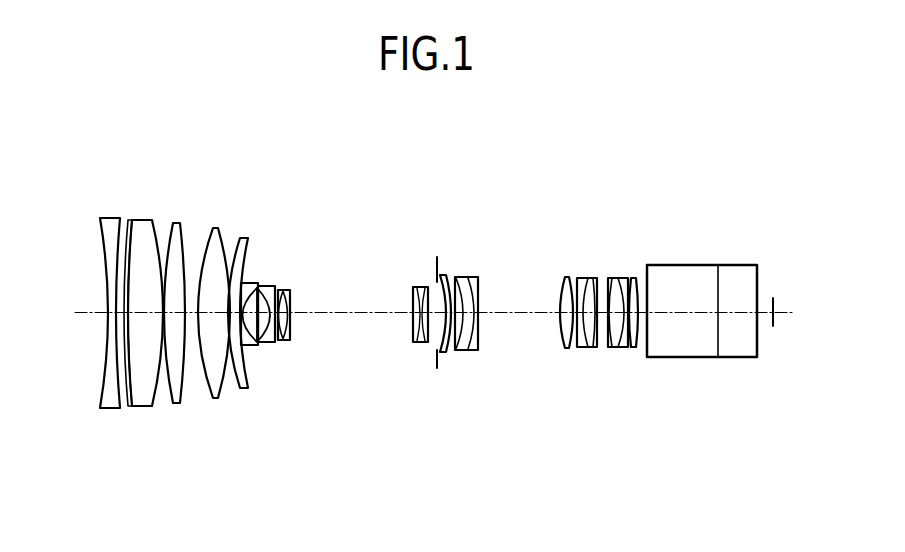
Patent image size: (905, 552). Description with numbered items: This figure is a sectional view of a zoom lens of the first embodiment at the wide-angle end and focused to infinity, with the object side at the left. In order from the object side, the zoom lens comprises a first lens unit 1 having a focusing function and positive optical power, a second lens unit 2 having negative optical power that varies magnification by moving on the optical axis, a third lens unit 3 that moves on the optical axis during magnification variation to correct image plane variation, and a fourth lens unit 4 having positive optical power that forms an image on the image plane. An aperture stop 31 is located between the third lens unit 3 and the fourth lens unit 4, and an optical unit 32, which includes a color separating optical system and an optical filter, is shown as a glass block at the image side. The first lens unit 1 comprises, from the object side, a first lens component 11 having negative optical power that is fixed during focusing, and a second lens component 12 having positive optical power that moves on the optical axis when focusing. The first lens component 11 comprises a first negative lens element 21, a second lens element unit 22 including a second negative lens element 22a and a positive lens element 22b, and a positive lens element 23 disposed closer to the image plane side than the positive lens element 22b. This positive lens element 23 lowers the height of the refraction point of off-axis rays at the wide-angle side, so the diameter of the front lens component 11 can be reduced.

The first lens unit 1 is at (85, 453).
The first lens component 11 is at (187, 166).
The second lens component 12 is at (260, 217).
The second lens unit 2 is at (297, 393).
The third lens unit 3 is at (433, 345).
The fourth lens unit 4 is at (642, 362).
The first negative lens element 21 is at (108, 218).
The second lens element unit 22 is at (138, 220).
The second negative lens element 22a is at (134, 406).
The positive lens element 22b is at (158, 390).
The positive lens element 23 is at (175, 223).
The aperture stop 31 is at (437, 270).
The optical unit 32 is at (762, 260).